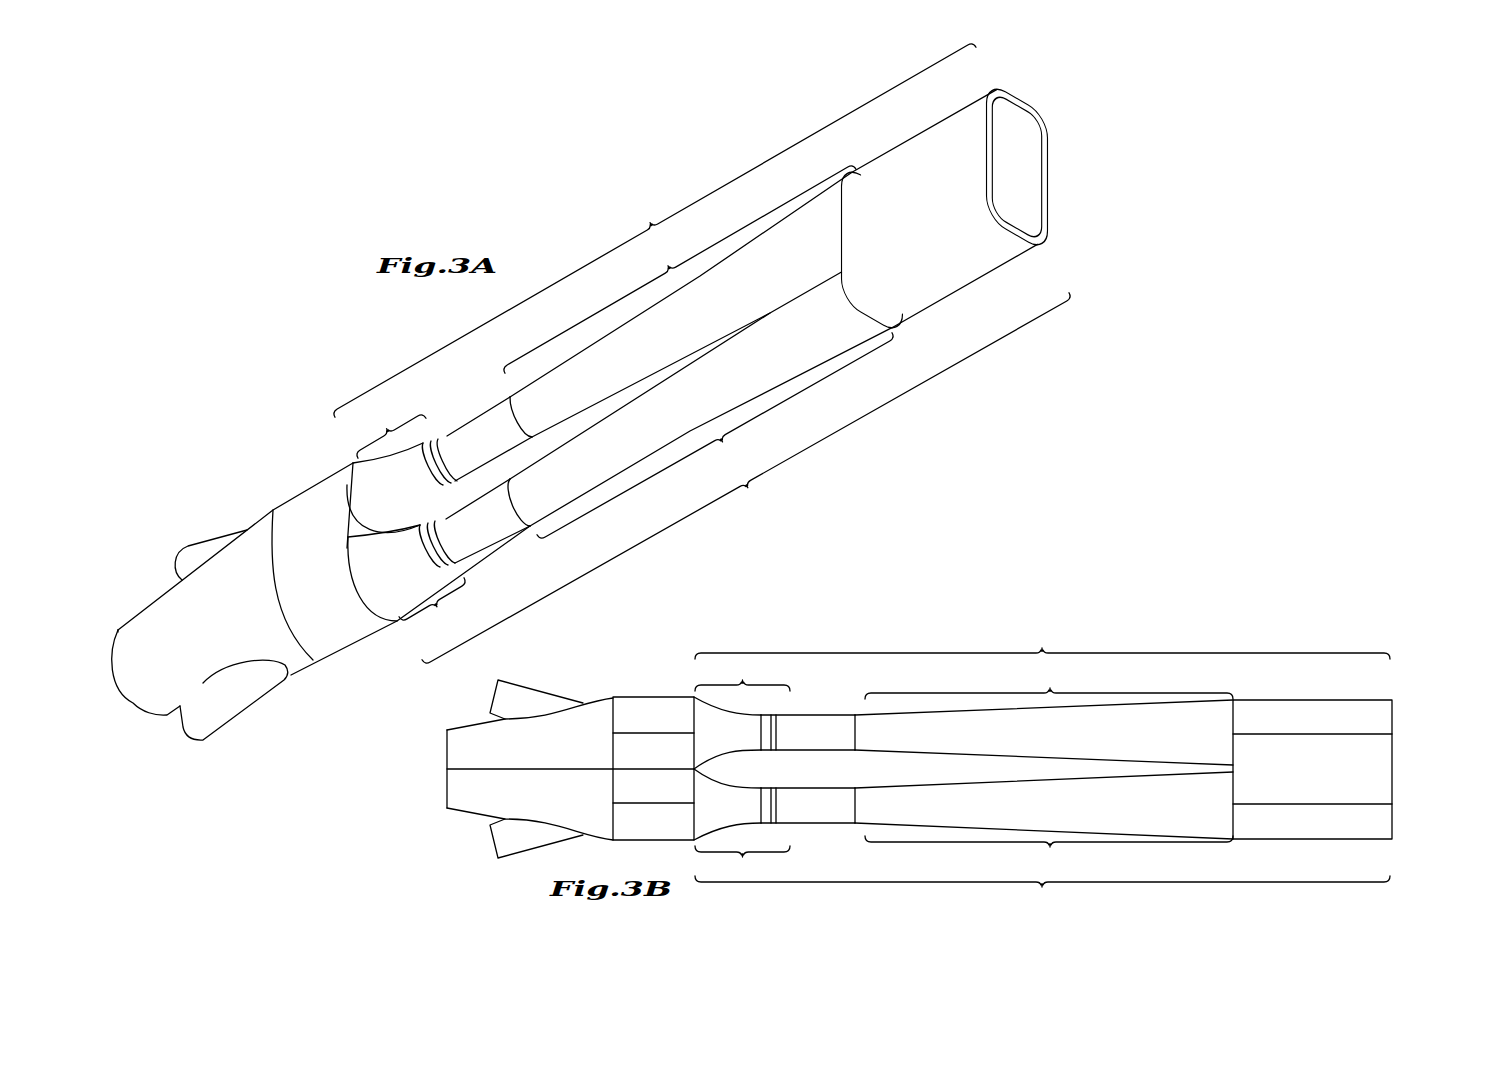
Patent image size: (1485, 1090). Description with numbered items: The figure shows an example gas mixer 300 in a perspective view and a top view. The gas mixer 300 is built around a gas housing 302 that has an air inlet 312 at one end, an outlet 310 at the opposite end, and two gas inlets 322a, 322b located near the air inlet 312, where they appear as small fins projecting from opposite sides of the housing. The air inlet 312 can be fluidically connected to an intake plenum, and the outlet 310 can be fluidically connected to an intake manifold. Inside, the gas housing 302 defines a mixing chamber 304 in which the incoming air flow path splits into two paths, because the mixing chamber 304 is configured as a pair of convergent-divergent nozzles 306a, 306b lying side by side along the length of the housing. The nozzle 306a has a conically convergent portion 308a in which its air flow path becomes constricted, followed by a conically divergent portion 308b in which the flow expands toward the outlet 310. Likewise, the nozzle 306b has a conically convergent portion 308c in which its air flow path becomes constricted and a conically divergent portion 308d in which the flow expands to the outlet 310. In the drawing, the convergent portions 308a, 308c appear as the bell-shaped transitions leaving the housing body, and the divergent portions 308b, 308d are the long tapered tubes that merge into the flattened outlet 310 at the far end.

In FIG. 3A, the gas mixer 300 is at (334, 369).
In FIG. 3B, the gas mixer 300 is at (663, 685).
In FIG. 3A, the gas housing 302 is at (462, 428).
In FIG. 3B, the gas housing 302 is at (857, 715).
In FIG. 3A, the mixing chamber 304 is at (601, 324).
In FIG. 3B, the mixing chamber 304 is at (965, 700).
In FIG. 3A, the nozzle 306a is at (655, 230).
In FIG. 3B, the nozzle 306a is at (1042, 642).
In FIG. 3A, the nozzle 306b is at (746, 478).
In FIG. 3A, the conically convergent portion 308a is at (389, 429).
In FIG. 3B, the conically convergent portion 308a is at (742, 714).
In FIG. 3A, the conically divergent portion 308b is at (680, 269).
In FIG. 3B, the conically divergent portion 308b is at (1049, 682).
In FIG. 3A, the conically convergent portion 308c is at (436, 607).
In FIG. 3B, the conically convergent portion 308c is at (742, 824).
In FIG. 3A, the conically divergent portion 308d is at (715, 435).
In FIG. 3B, the conically divergent portion 308d is at (1042, 875).
In FIG. 3A, the outlet 310 is at (1030, 159).
In FIG. 3B, the outlet 310 is at (1406, 770).
In FIG. 3A, the air inlet 312 is at (132, 715).
In FIG. 3B, the air inlet 312 is at (438, 774).
In FIG. 3A, the gas inlet 322a is at (192, 552).
In FIG. 3B, the gas inlet 322a is at (496, 695).
In FIG. 3A, the gas inlet 322b is at (228, 708).
In FIG. 3B, the gas inlet 322b is at (496, 841).